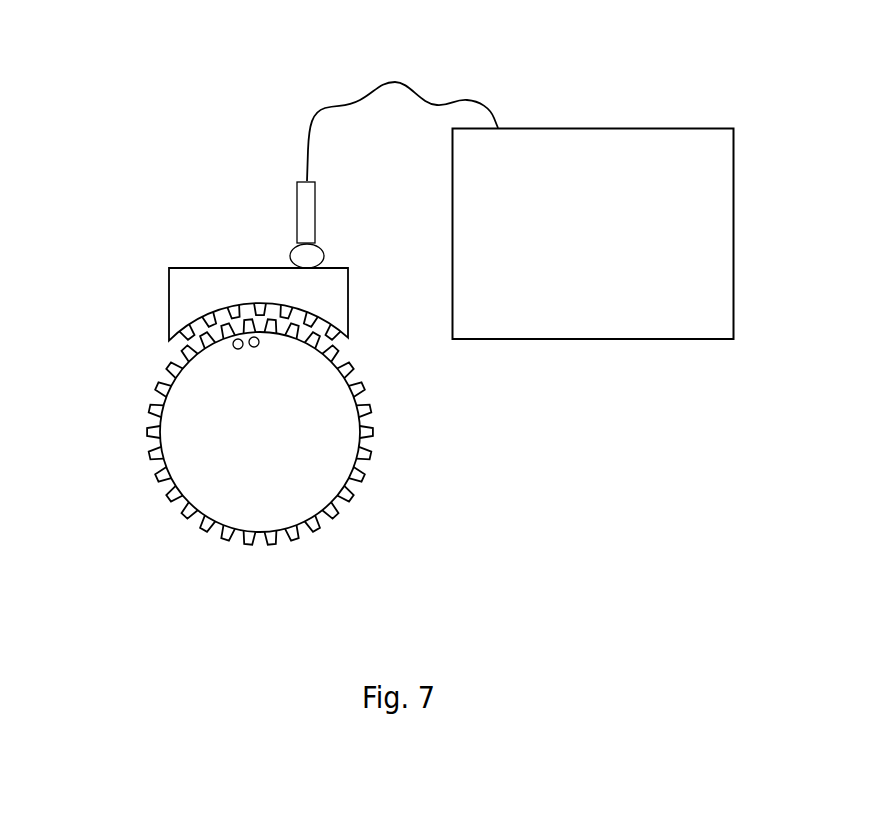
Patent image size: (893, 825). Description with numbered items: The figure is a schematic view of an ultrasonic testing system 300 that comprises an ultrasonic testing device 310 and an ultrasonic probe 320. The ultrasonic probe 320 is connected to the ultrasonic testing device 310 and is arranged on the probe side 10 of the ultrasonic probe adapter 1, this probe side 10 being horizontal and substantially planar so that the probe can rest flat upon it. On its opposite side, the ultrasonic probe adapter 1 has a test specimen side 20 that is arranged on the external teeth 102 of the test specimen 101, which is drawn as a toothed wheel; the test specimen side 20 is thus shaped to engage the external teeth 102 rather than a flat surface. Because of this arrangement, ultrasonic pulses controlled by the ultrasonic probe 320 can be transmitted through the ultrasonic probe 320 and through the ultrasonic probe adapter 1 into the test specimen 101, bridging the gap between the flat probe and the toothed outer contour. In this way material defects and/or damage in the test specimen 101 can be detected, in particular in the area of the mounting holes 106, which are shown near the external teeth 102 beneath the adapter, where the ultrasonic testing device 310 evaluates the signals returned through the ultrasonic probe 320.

The ultrasonic testing system 300 is at (163, 115).
The ultrasonic probe adapter 1 is at (169, 297).
The probe side 10 is at (223, 268).
The test specimen side 20 is at (304, 318).
The test specimen 101 is at (175, 422).
The external teeth 102 is at (163, 495).
The mounting holes 106 is at (255, 347).
The ultrasonic testing device 310 is at (670, 339).
The ultrasonic probe 320 is at (295, 255).